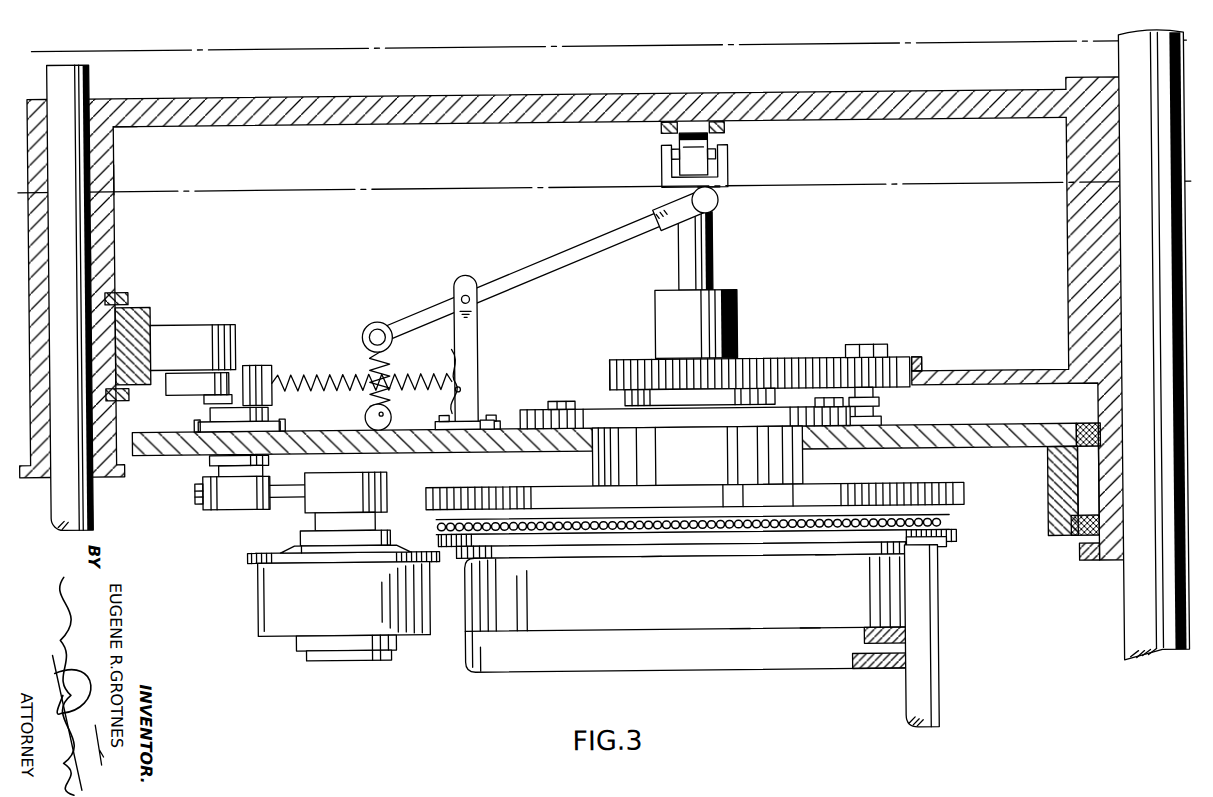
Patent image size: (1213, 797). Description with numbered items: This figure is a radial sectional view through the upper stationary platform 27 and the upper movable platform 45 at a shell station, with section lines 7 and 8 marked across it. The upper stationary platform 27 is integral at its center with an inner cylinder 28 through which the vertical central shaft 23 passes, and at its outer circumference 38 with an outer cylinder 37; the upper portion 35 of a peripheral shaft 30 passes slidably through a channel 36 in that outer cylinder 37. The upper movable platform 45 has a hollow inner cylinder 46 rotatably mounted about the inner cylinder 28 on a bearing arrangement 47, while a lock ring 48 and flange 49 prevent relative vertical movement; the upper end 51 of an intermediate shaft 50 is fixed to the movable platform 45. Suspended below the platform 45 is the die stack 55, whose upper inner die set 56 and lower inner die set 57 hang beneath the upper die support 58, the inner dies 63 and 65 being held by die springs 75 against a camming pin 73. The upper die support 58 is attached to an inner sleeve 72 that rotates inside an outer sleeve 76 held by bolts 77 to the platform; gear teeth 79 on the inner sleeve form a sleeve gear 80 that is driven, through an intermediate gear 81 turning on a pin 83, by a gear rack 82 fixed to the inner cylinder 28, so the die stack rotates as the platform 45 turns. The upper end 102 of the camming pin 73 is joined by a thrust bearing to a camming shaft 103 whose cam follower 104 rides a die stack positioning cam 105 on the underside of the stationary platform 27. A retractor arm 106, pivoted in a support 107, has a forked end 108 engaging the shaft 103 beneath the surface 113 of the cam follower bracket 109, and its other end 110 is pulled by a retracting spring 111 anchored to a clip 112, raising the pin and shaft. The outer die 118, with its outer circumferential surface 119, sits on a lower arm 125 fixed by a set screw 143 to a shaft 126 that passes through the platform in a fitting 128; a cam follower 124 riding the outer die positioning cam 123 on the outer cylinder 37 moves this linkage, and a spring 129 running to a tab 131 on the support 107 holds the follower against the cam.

The section line 7- 7 is at (1195, 203).
The section line 8- 8 is at (1189, 62).
The central shaft 23 is at (1162, 367).
The upper stationary platform 27 is at (387, 100).
The inner cylinder 28 is at (1072, 165).
The peripheral shaft 30 is at (88, 223).
The upper portion of peripheral shaft 35 is at (100, 500).
The channel 36 is at (108, 248).
The outer cylinder 37 is at (108, 181).
The outer circumference 38 is at (121, 130).
The upper movable platform 45 is at (176, 452).
The hollow inner cylinder 46 is at (1060, 484).
The bearing arrangement 47 is at (1088, 442).
The lock ring 48 is at (1082, 564).
The flange 49 is at (1090, 428).
The intermediate shaft 50 is at (940, 683).
The upper end of intermediate shaft 51 is at (940, 561).
The die stack 55 is at (582, 671).
The upper inner die set 56 is at (650, 558).
The lower inner die set 57 is at (810, 612).
The upper die support 58 is at (535, 486).
The upper inner die 63 is at (824, 540).
The lower inner die 65 is at (738, 614).
The inner sleeve 72 is at (625, 397).
The camming pin 73 is at (739, 309).
The die spring 75 is at (950, 528).
The outer sleeve 76 is at (520, 414).
The bolt 77 is at (556, 400).
The gear teeth 79 is at (618, 360).
The sleeve gear 80 is at (795, 360).
The intermediate gear 81 is at (822, 360).
The gear rack 82 is at (903, 360).
The pin 83 is at (883, 402).
The upper end of camming pin 102 is at (738, 292).
The camming shaft 103 is at (714, 262).
The cam follower 104 is at (712, 140).
The die stack positioning cam 105 is at (706, 116).
The retractor arm 106 is at (558, 259).
The support 107 is at (479, 348).
The forked end 108 is at (662, 215).
The cam follower bracket 109 is at (732, 176).
The end of retractor arm 110 is at (398, 313).
The retracting spring 111 is at (366, 360).
The clip 112 is at (366, 416).
The surface 113 is at (726, 194).
The outer die 118 is at (246, 555).
The outer circumferential surface 119 is at (258, 591).
The outer die positioning cam 123 is at (139, 303).
The cam follower 124 is at (185, 322).
The lower arm 125 is at (290, 497).
The shaft 126 is at (200, 396).
The fitting 128 is at (196, 422).
The spring 129 is at (286, 378).
The tab 131 is at (450, 366).
The set screw 143 is at (201, 491).